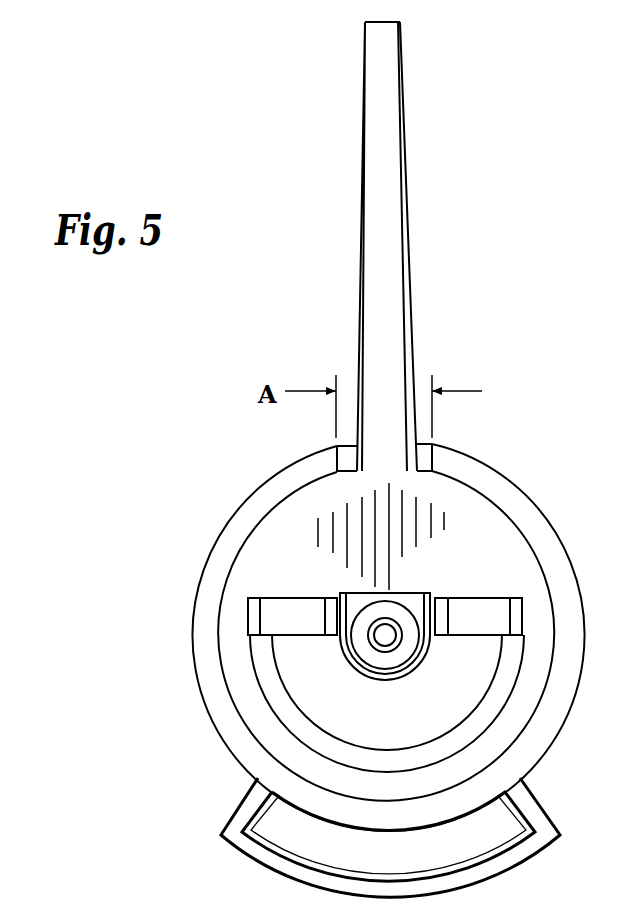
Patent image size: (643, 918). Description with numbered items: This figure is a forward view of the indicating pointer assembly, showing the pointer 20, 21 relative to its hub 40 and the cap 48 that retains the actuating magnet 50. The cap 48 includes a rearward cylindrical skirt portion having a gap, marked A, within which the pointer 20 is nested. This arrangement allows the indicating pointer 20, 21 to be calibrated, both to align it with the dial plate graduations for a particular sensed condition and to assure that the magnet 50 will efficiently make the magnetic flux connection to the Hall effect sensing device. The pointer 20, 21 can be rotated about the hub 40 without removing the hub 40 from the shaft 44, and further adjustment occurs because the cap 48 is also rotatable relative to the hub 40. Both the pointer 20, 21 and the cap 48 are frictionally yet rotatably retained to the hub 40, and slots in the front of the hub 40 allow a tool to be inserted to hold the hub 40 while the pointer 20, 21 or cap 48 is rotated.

The pointer 20 is at (382, 140).
The pointer 21 is at (293, 530).
The hub 40 is at (403, 613).
The shaft 44 is at (387, 636).
The cap 48 is at (469, 472).
The actuating magnet 50 is at (300, 838).